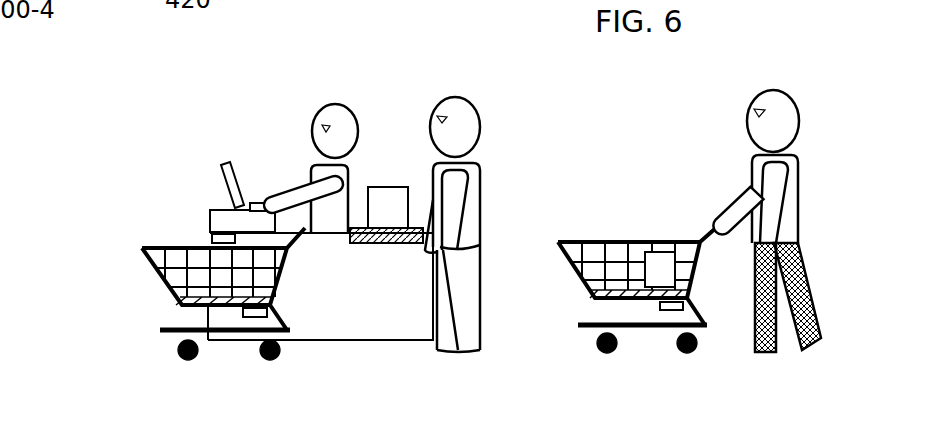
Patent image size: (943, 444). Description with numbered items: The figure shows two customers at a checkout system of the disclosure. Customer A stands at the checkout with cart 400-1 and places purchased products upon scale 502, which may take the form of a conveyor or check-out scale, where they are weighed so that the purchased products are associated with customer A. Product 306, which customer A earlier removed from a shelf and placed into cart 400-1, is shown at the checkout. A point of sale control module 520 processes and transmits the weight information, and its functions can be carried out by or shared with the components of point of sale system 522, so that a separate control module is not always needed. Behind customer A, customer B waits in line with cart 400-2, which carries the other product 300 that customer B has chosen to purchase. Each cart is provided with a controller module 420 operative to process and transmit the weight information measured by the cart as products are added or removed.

The cart 400-1 is at (157, 273).
The cart 400-2 is at (589, 236).
The point of sale control module 520 is at (212, 240).
The point of sale system 522 is at (208, 199).
The scale 502 is at (385, 243).
The product 306 is at (383, 195).
The product 300 is at (658, 262).
The controller module 420 is at (683, 306).